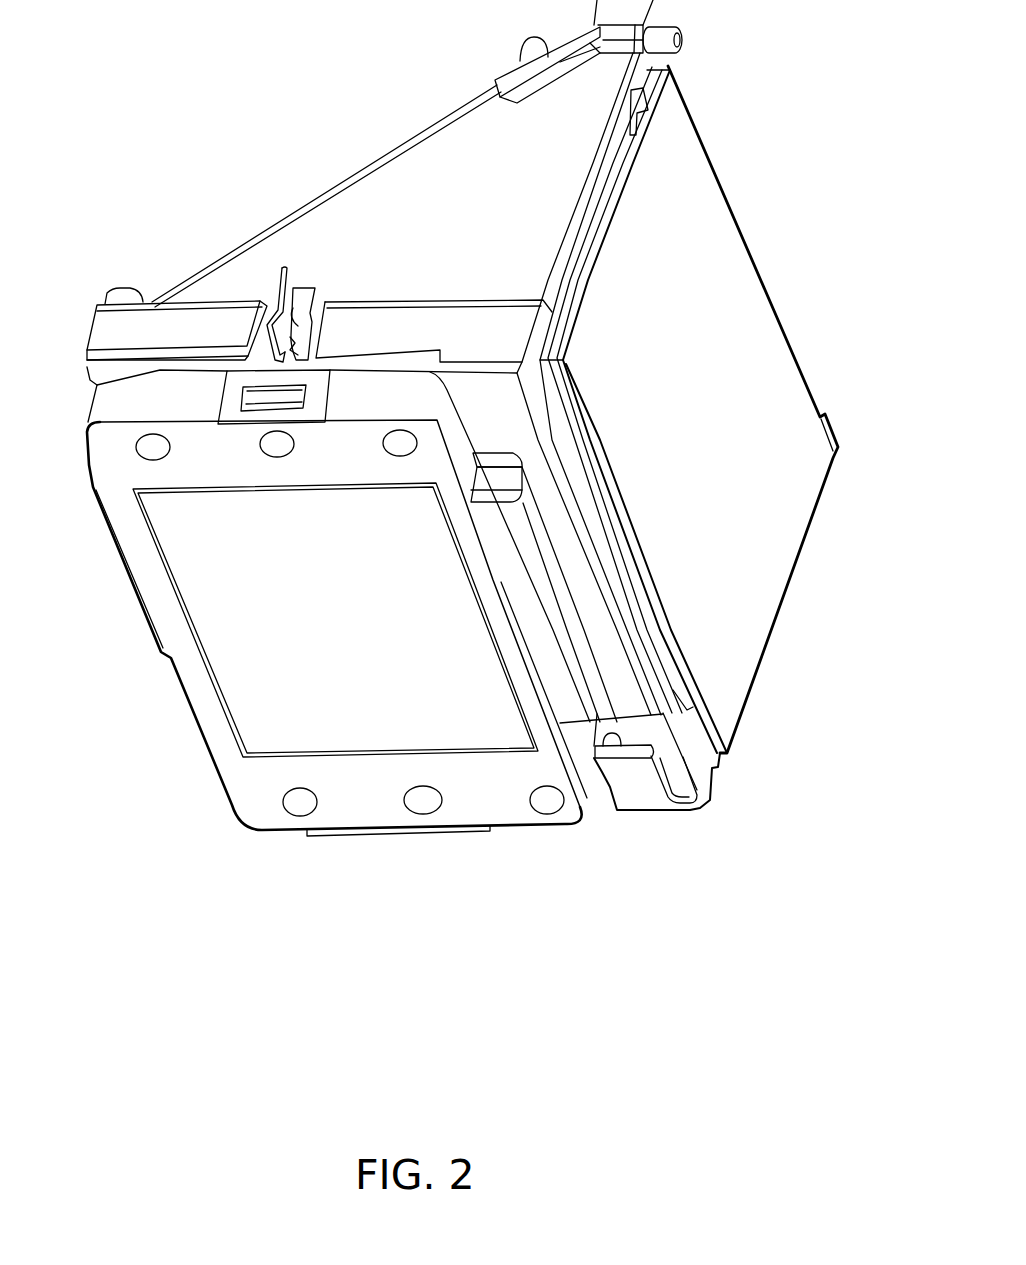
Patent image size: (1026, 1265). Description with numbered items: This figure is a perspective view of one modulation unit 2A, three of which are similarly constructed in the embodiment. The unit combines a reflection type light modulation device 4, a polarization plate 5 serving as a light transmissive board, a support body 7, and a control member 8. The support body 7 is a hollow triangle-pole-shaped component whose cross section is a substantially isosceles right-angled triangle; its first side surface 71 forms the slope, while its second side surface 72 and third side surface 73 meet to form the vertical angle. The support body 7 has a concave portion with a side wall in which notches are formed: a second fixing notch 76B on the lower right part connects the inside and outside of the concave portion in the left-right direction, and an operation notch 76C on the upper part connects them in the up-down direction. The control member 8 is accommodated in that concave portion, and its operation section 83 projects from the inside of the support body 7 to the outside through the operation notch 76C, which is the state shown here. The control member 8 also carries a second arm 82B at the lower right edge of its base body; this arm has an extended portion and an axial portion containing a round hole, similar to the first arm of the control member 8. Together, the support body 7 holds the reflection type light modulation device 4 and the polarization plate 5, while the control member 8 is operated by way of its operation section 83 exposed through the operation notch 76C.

The modulation unit 2A is at (188, 93).
The reflection type light modulation device 4 is at (368, 800).
The polarization plate 5 is at (753, 583).
The support body 7 is at (420, 163).
The first side surface 71 is at (473, 100).
The second side surface 72 is at (157, 367).
The third side surface 73 is at (543, 327).
The second fixing notch 76B is at (604, 787).
The operation notch 76C is at (313, 293).
The second arm 82B is at (648, 695).
The operation section 83 is at (307, 310).
The control member 8 is at (290, 248).